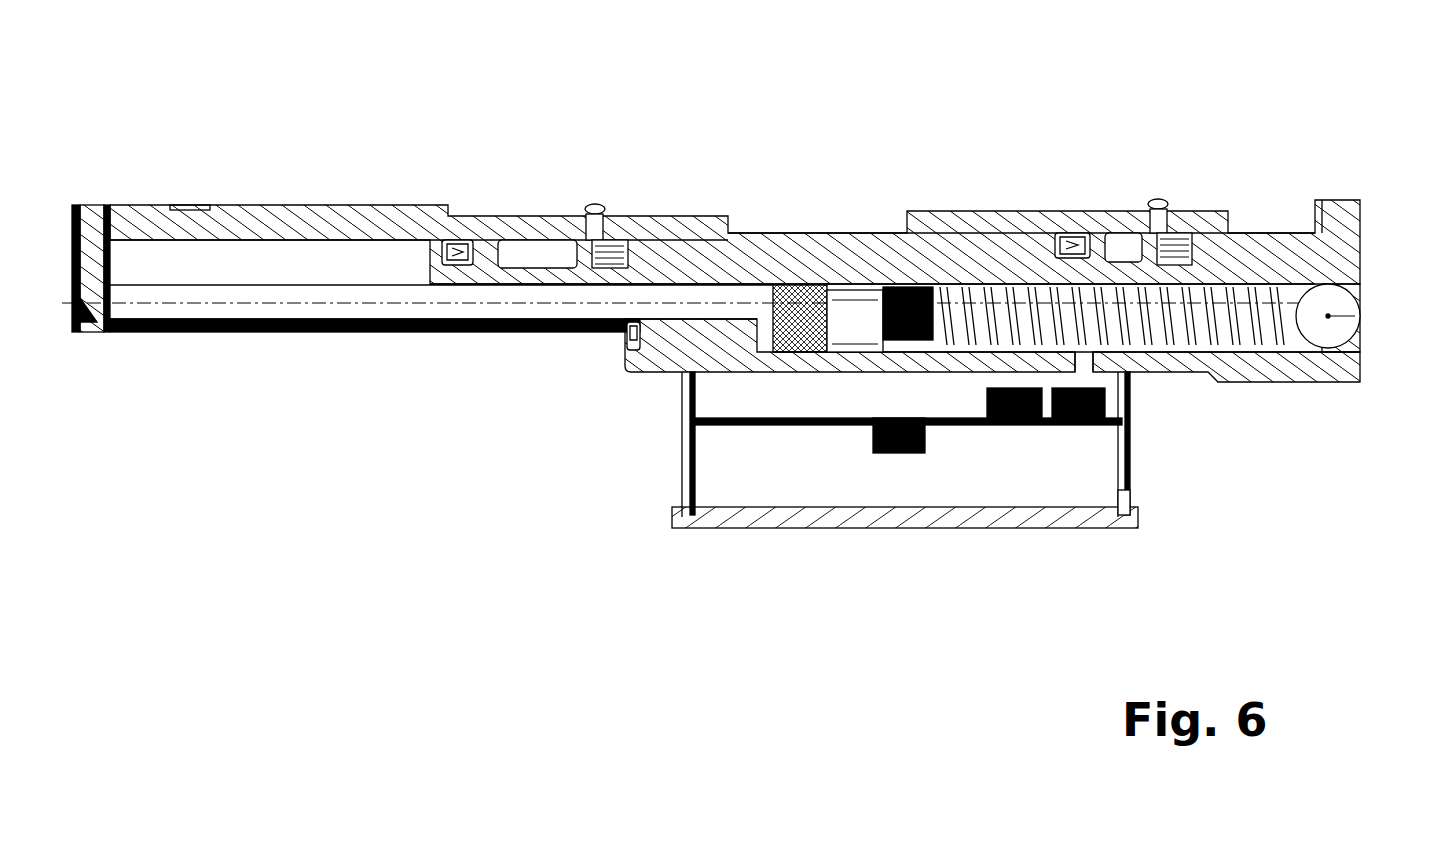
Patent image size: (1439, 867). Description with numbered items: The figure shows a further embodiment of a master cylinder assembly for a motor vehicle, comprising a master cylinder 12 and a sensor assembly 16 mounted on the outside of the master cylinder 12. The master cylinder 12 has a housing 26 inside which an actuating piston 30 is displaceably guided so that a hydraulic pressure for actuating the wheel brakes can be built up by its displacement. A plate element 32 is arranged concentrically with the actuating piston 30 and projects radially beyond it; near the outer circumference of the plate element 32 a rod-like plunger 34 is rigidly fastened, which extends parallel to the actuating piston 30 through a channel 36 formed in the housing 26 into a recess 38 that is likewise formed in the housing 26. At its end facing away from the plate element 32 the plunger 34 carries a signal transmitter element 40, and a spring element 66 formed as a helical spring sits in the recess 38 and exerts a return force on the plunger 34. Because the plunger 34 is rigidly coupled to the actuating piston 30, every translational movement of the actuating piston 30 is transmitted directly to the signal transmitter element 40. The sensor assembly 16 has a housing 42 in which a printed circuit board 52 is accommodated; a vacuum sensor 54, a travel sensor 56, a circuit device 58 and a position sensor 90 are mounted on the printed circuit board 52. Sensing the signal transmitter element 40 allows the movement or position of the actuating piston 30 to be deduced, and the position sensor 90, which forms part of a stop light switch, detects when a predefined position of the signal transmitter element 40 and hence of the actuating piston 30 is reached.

The master cylinder 12 is at (711, 166).
The sensor assembly 16 is at (900, 574).
The housing 26 is at (1360, 254).
The actuating piston 30 is at (716, 186).
The plate element 32 is at (106, 391).
The plunger 34 is at (441, 408).
The channel 36 is at (895, 228).
The recess 38 is at (1112, 246).
The signal transmitter element 40 is at (853, 250).
The housing 42 is at (1164, 471).
The printed circuit board 52 is at (907, 509).
The vacuum sensor 54 is at (1078, 494).
The travel sensor 56 is at (967, 509).
The circuit device 58 is at (901, 521).
The spring element 66 is at (992, 417).
The position sensor 90 is at (1014, 494).